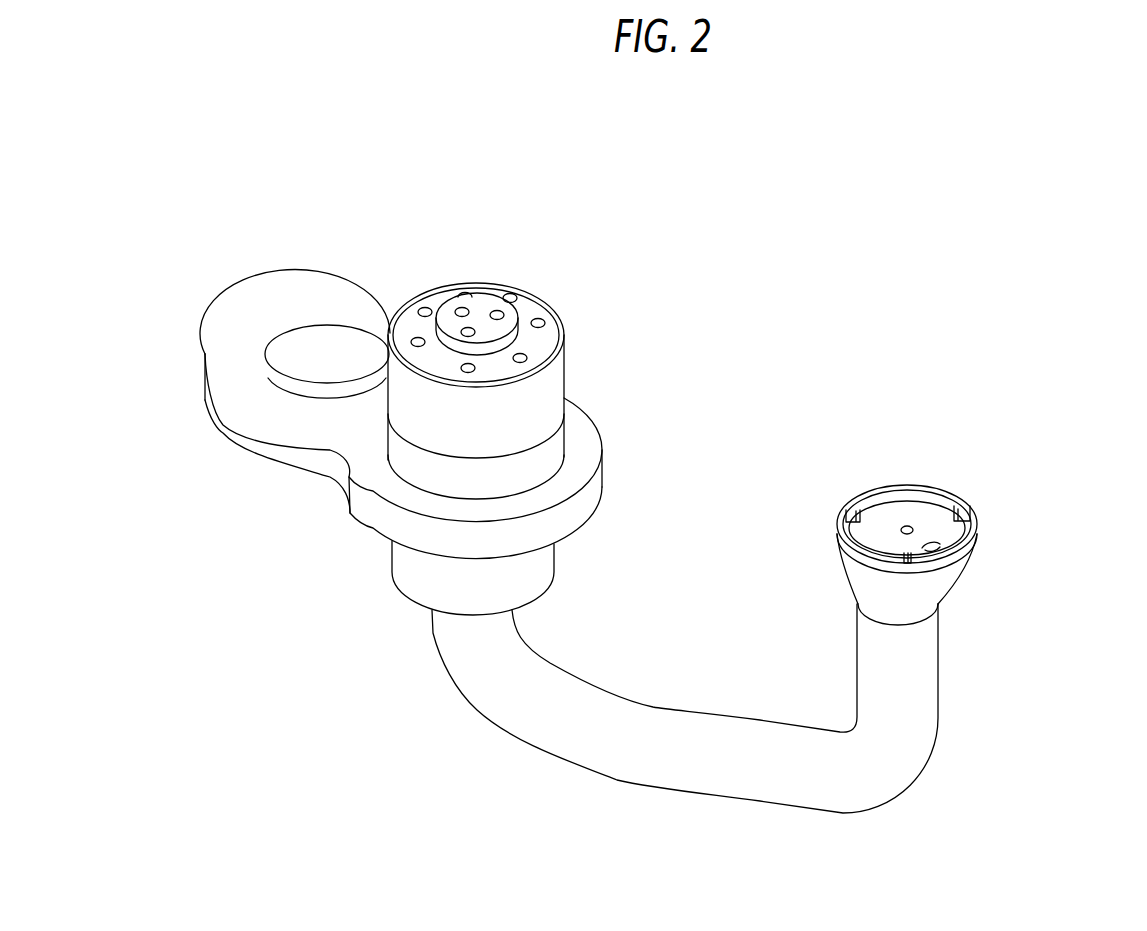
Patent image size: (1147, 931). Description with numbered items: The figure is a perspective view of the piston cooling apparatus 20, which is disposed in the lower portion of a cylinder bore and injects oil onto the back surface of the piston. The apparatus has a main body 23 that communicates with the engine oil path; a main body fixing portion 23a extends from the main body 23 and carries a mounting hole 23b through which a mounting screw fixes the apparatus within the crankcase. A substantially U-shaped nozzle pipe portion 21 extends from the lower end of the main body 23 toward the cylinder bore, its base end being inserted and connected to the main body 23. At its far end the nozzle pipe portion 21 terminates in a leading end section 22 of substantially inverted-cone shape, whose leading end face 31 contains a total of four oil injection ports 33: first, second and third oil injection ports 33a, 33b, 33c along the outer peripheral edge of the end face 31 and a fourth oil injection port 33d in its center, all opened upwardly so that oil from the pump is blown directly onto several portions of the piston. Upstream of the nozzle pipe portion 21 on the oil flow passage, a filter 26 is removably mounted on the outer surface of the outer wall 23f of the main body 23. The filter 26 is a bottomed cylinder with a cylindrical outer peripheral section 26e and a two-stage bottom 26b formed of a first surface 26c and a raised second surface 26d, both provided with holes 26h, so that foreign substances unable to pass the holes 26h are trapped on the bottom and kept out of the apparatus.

The piston cooling apparatus 20 is at (808, 330).
The nozzle pipe portion 21 is at (703, 725).
The leading end section 22 is at (972, 524).
The main body 23 is at (437, 423).
The main body fixing portion 23a is at (280, 312).
The mounting hole 23b is at (333, 347).
The outer wall 23f is at (568, 433).
The filter 26 is at (515, 329).
The bottom 26b is at (488, 257).
The first surface 26c is at (498, 267).
The second surface 26d is at (448, 310).
The cylindrical outer peripheral section 26e is at (553, 380).
The holes 26h is at (427, 304).
The leading end face 31 is at (920, 508).
The oil injection ports 33 is at (981, 541).
The first oil injection port 33a is at (957, 533).
The second oil injection port 33b is at (975, 512).
The third oil injection port 33c is at (933, 546).
The fourth oil injection port 33d is at (913, 527).